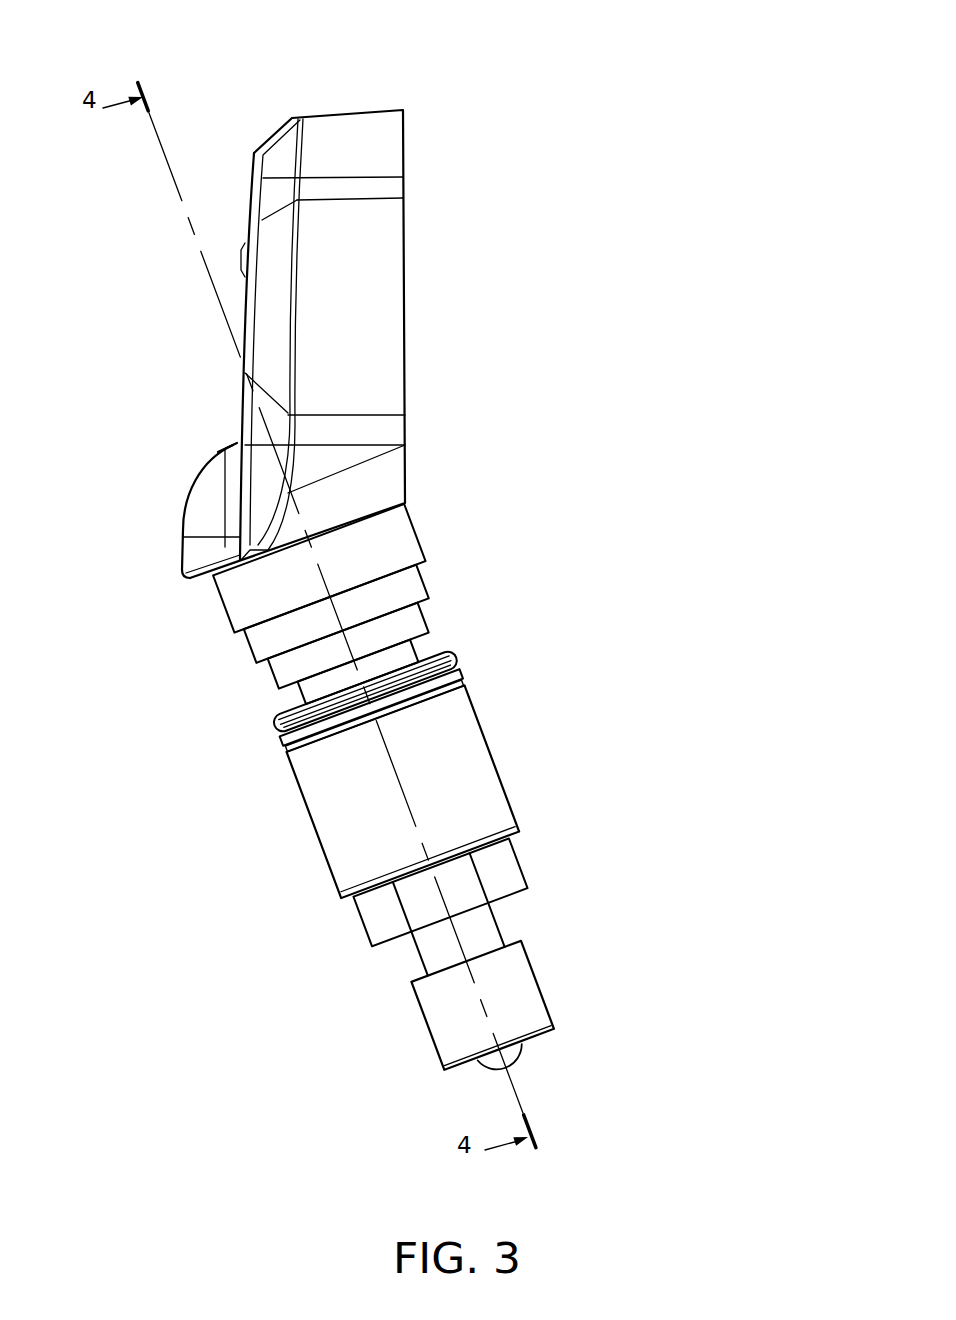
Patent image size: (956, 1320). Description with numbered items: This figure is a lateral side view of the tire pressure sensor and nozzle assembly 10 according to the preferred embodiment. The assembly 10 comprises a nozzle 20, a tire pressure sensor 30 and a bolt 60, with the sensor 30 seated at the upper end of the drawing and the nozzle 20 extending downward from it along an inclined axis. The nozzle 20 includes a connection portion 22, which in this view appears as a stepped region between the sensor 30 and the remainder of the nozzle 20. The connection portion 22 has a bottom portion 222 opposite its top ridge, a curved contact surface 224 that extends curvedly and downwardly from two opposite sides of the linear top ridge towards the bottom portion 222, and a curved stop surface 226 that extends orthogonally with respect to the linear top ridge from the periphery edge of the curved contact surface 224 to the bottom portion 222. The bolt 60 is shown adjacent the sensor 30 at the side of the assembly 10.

The tire pressure sensor and nozzle assembly 10 is at (536, 72).
The tire pressure sensor 30 is at (378, 98).
The bolt 60 is at (208, 441).
The connection portion 22 is at (432, 531).
The curved contact surface 224 is at (405, 523).
The curved stop surface 226 is at (362, 558).
The bottom portion 222 is at (272, 618).
The nozzle 20 is at (531, 729).